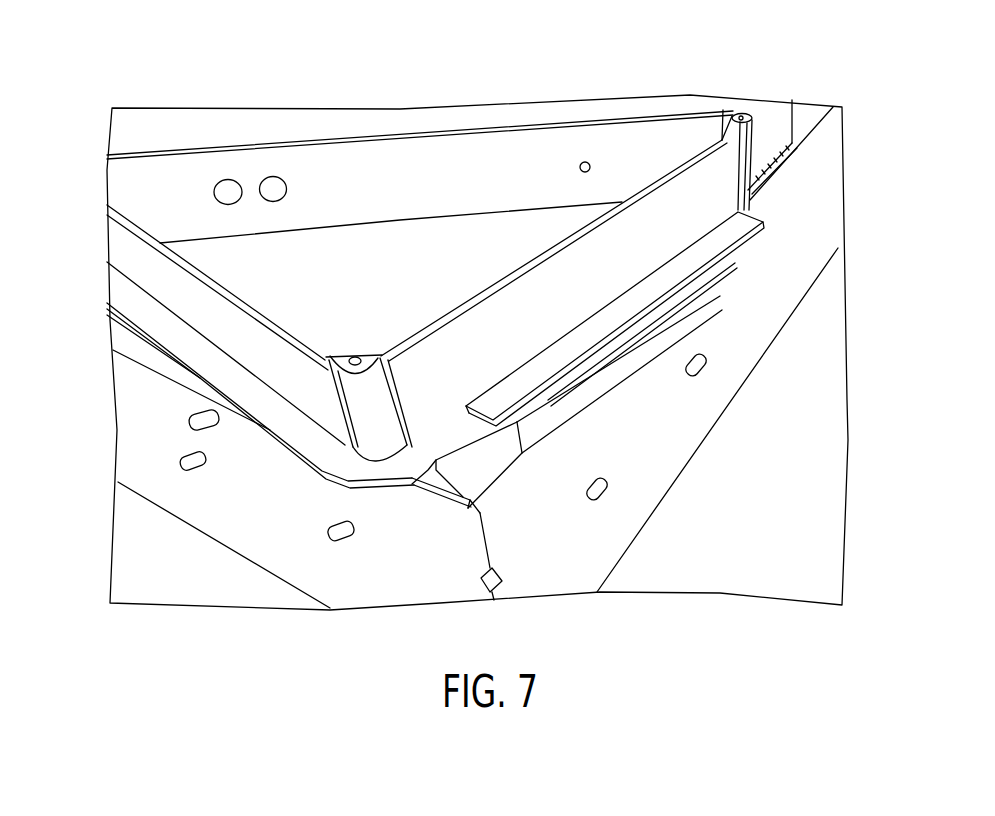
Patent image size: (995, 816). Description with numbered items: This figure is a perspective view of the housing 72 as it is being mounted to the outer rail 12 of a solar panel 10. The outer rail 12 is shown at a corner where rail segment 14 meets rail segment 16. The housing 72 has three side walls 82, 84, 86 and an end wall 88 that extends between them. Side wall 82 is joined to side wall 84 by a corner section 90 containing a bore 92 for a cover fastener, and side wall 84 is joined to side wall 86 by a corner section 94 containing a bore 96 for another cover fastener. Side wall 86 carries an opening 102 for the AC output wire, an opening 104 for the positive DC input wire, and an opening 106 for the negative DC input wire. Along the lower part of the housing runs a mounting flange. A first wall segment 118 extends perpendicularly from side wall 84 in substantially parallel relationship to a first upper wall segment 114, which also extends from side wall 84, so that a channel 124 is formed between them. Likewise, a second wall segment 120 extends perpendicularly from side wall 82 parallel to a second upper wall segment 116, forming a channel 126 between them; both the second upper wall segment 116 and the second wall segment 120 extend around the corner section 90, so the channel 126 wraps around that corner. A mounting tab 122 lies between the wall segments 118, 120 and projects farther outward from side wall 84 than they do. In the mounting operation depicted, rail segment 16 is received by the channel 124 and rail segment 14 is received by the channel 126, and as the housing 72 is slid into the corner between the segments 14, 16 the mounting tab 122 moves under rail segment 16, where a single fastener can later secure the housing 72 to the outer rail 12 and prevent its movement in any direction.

The solar panel 10 is at (918, 94).
The outer rail 12 is at (692, 486).
The rail segment 14 is at (128, 458).
The rail segment 16 is at (747, 380).
The housing 72 is at (80, 236).
The side wall 82 is at (143, 270).
The side wall 84 is at (590, 268).
The side wall 86 is at (663, 130).
The end wall 88 is at (428, 255).
The corner section 90 is at (373, 387).
The bore 92 is at (353, 357).
The corner section 94 is at (755, 132).
The bore 96 is at (742, 118).
The opening 102 is at (585, 162).
The opening 104 is at (228, 190).
The opening 106 is at (272, 188).
The first upper wall segment 114 is at (518, 387).
The second upper wall segment 116 is at (328, 448).
The first wall segment 118 is at (572, 380).
The second wall segment 120 is at (192, 372).
The mounting tab 122 is at (482, 468).
The channel 124 is at (623, 340).
The channel 126 is at (137, 338).